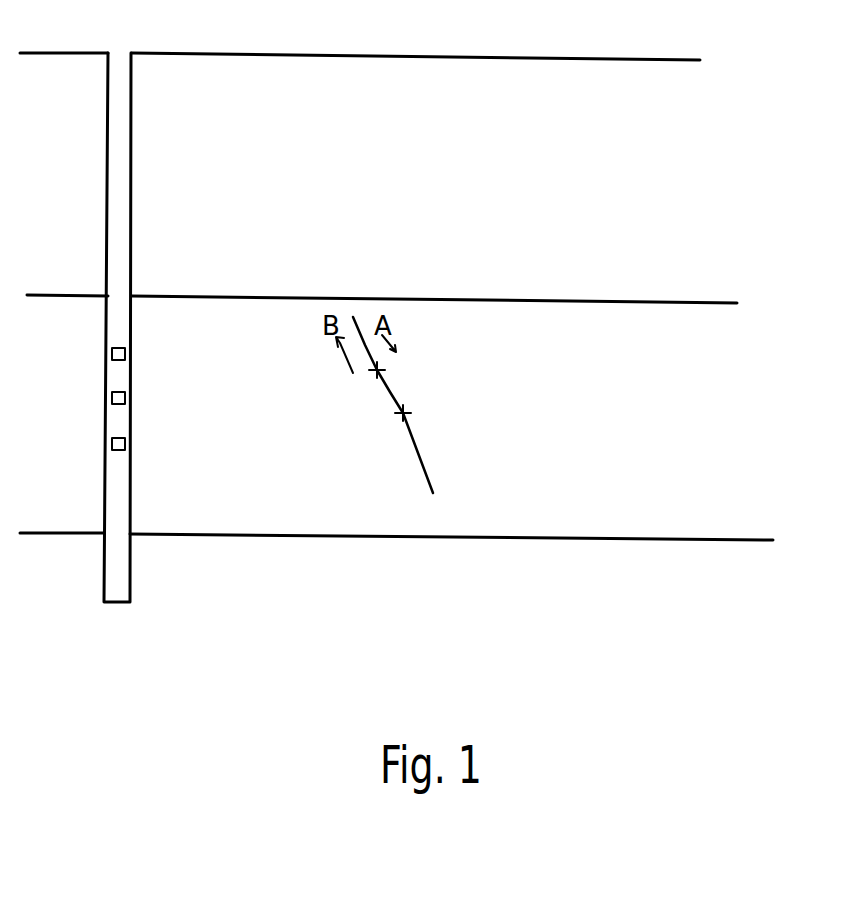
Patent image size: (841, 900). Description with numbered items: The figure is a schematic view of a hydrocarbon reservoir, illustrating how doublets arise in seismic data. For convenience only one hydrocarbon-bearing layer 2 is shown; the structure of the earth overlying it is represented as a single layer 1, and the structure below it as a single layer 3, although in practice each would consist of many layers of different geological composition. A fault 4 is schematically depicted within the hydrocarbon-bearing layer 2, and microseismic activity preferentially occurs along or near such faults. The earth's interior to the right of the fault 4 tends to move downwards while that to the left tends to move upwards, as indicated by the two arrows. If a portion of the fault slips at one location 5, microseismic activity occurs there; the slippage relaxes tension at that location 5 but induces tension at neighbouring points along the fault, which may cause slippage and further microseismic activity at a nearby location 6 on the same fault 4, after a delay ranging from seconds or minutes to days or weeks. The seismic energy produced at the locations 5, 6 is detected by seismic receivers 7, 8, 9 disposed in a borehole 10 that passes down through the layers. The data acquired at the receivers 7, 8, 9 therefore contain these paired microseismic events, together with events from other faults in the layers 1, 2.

The overlying layer 1 is at (786, 179).
The hydrocarbon-bearing layer 2 is at (778, 447).
The underlying layer 3 is at (778, 673).
The fault 4 is at (433, 491).
The location 5 is at (389, 373).
The nearby location 6 is at (414, 416).
The seismic receiver 7 is at (112, 353).
The seismic receiver 8 is at (112, 397).
The seismic receiver 9 is at (112, 443).
The borehole 10 is at (117, 188).